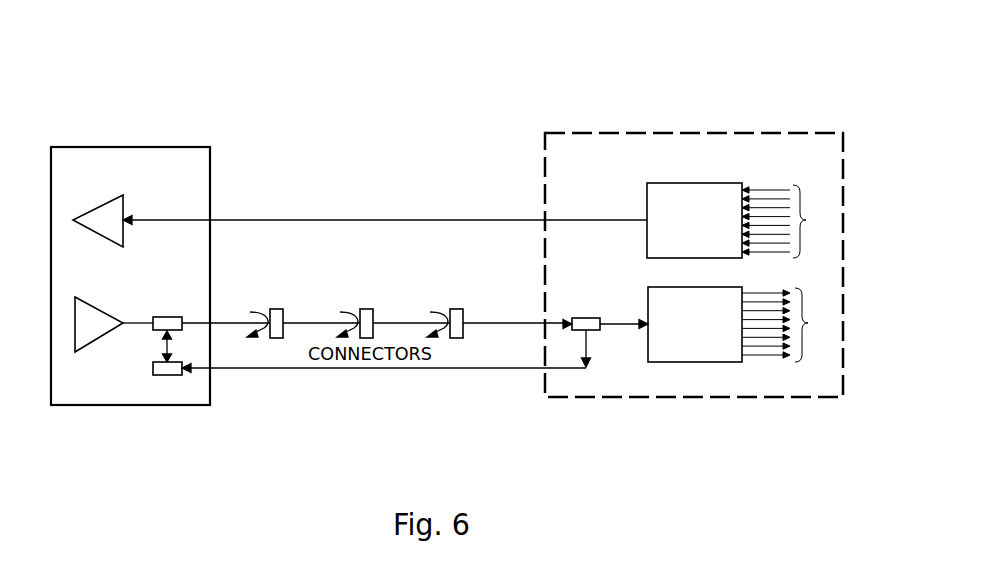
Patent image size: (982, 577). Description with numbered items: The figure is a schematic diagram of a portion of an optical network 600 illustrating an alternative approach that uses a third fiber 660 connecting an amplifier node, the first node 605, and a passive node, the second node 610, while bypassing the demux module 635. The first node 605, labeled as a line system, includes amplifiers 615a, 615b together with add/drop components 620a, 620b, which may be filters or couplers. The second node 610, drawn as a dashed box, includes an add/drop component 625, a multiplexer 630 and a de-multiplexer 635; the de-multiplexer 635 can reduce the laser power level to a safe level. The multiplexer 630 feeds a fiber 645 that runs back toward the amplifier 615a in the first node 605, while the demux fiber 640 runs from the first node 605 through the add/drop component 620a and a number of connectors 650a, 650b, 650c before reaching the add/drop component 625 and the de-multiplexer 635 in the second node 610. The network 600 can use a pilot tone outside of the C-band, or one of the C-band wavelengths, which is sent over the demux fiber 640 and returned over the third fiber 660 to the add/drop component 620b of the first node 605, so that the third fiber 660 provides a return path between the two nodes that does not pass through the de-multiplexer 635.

The optical network 600 is at (328, 110).
The first node 605 is at (212, 395).
The second node 610 is at (793, 397).
The amplifier 615a is at (100, 205).
The amplifier 615b is at (100, 337).
The add/drop component 620a is at (168, 317).
The add/drop component 620b is at (170, 375).
The add/drop component 625 is at (586, 318).
The multiplexer 630 is at (698, 183).
The de-multiplexer 635 is at (700, 362).
The demux fiber 640 is at (506, 323).
The receive fiber link 645 is at (286, 220).
The connector 650a is at (277, 309).
The connector 650b is at (367, 309).
The connector 650c is at (455, 309).
The third fiber 660 is at (495, 368).